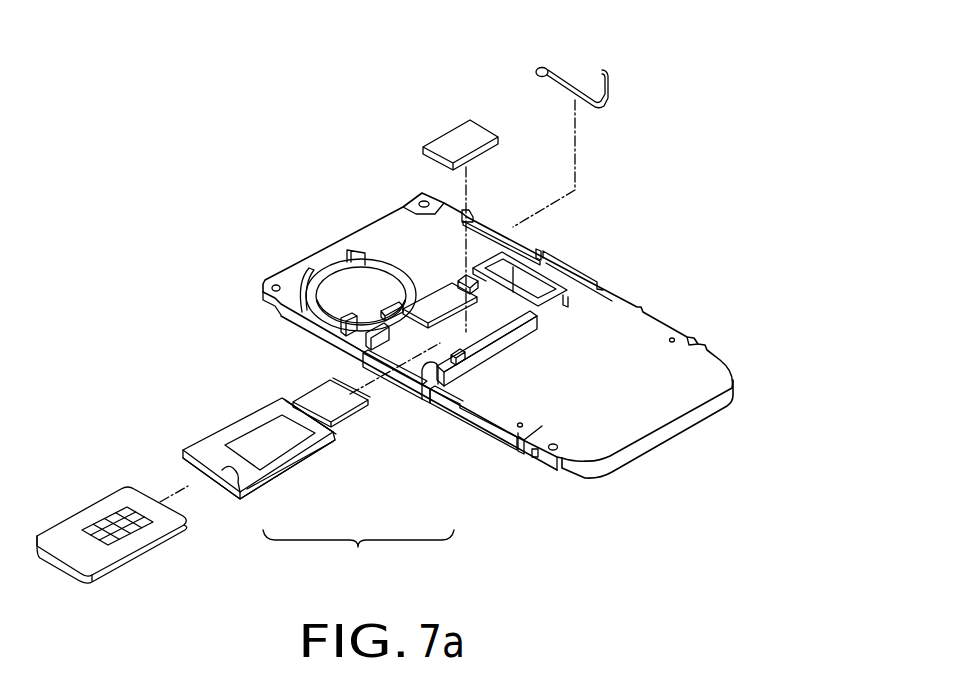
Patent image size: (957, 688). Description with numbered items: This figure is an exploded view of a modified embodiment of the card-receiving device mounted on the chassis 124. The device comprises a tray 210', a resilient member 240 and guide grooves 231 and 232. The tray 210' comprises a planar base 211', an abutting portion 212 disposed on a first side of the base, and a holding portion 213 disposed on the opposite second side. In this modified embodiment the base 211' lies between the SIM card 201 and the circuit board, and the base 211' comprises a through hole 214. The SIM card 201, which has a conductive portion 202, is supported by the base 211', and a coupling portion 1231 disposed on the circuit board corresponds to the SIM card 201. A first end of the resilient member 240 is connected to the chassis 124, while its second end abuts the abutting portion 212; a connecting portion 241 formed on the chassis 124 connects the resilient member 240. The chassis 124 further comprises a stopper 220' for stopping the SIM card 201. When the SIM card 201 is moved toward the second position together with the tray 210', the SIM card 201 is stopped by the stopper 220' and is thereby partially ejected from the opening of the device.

The chassis 124 is at (637, 327).
The coupling portion 1231 is at (455, 137).
The resilient member 240 is at (562, 88).
The connecting portion 241 is at (477, 272).
The stopper 220' is at (386, 247).
The guide groove 232 is at (362, 354).
The guide groove 231 is at (420, 367).
The through hole 214 is at (267, 438).
The holding portion 213 is at (233, 476).
The base 211' is at (332, 466).
The abutting portion 212 is at (340, 415).
The tray 210' is at (358, 554).
The SIM card 201 is at (97, 563).
The conductive portion 202 is at (115, 517).